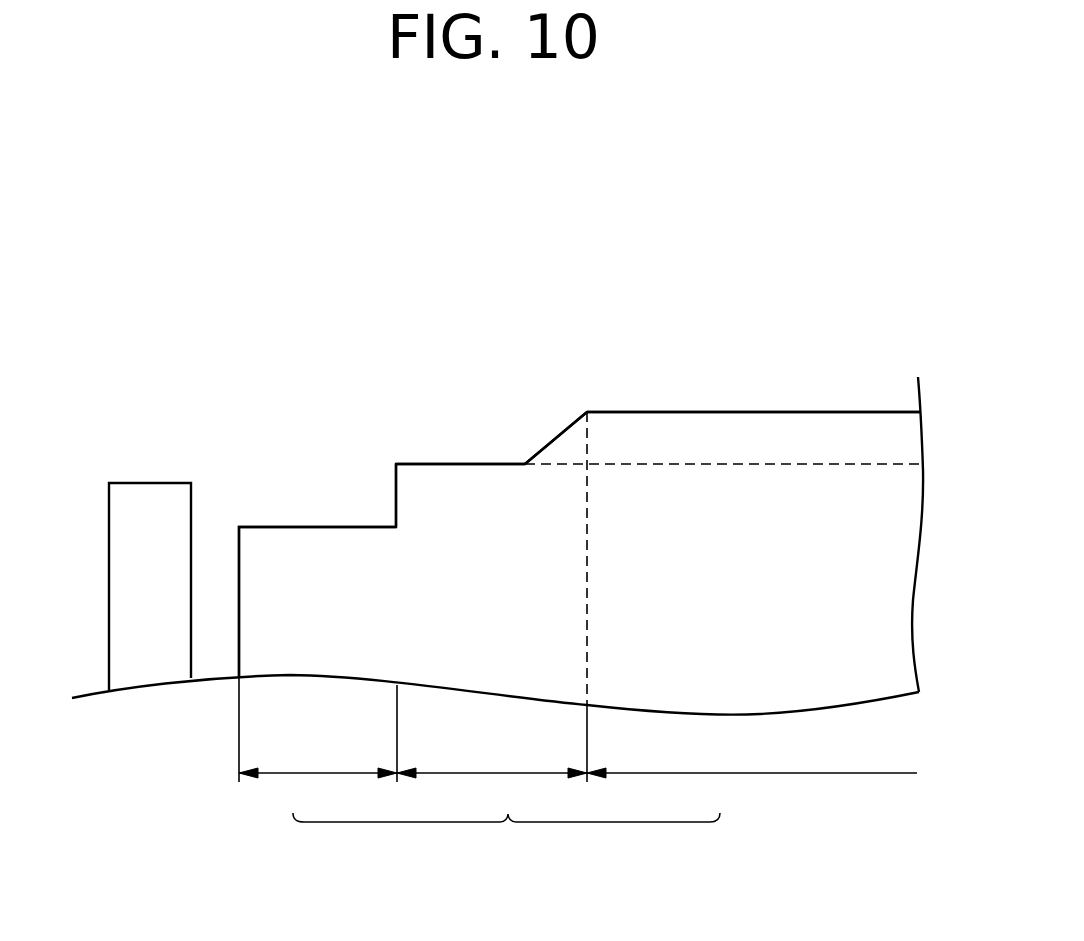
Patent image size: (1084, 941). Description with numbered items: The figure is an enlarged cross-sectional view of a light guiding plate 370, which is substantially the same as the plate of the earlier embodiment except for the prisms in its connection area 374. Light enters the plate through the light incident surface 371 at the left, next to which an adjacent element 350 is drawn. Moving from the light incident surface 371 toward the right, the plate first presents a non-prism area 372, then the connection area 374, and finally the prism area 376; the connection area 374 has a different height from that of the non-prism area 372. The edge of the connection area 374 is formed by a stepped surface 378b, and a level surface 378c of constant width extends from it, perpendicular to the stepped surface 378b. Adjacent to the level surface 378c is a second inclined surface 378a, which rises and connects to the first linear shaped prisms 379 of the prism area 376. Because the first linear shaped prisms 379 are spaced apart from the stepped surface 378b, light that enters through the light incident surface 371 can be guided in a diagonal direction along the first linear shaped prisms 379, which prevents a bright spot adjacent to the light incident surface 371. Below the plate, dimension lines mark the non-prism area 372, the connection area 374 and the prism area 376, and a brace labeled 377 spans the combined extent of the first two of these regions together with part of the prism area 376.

The gate structure 350 is at (150, 490).
The light guiding plate 370 is at (828, 400).
The light incident surface 371 is at (237, 548).
The non-prism area 372 is at (318, 746).
The connection area 374 is at (492, 757).
The prism area 376 is at (752, 791).
The recessed region 377 is at (506, 840).
The second inclined surface 378a is at (552, 435).
The stepped surface 378b is at (395, 480).
The level surface 378c is at (467, 464).
The first linear shaped prisms 379 is at (722, 412).